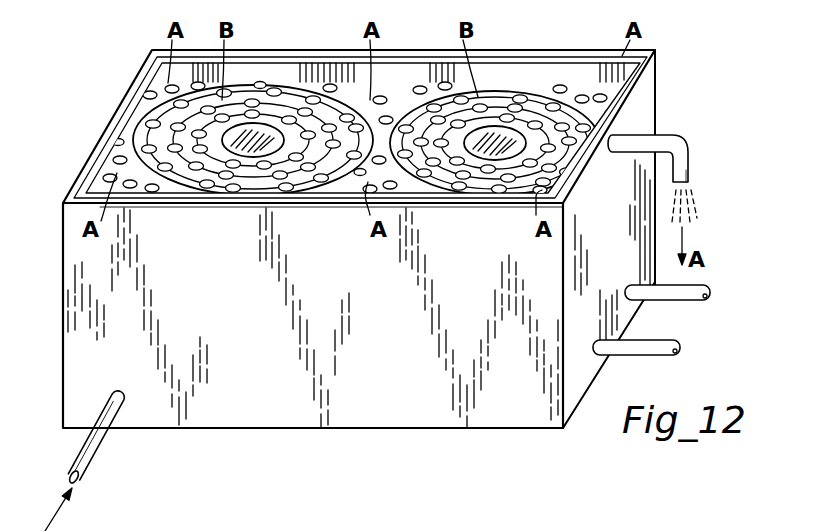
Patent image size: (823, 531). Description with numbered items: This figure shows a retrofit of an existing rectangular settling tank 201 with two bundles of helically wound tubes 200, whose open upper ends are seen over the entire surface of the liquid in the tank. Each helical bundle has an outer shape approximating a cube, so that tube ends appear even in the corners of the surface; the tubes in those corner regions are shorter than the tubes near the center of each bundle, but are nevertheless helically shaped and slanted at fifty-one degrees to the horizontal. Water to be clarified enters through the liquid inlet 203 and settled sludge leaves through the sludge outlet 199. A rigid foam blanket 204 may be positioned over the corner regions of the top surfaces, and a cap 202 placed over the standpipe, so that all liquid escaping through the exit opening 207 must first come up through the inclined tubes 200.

The sludge outlet 199 is at (705, 302).
The helically wound tubes 200 is at (258, 100).
The settling tank 201 is at (283, 371).
The cap 202 is at (510, 127).
The liquid inlet 203 is at (100, 450).
The rigid foam blanket 204 is at (573, 60).
The exit opening 207 is at (674, 140).